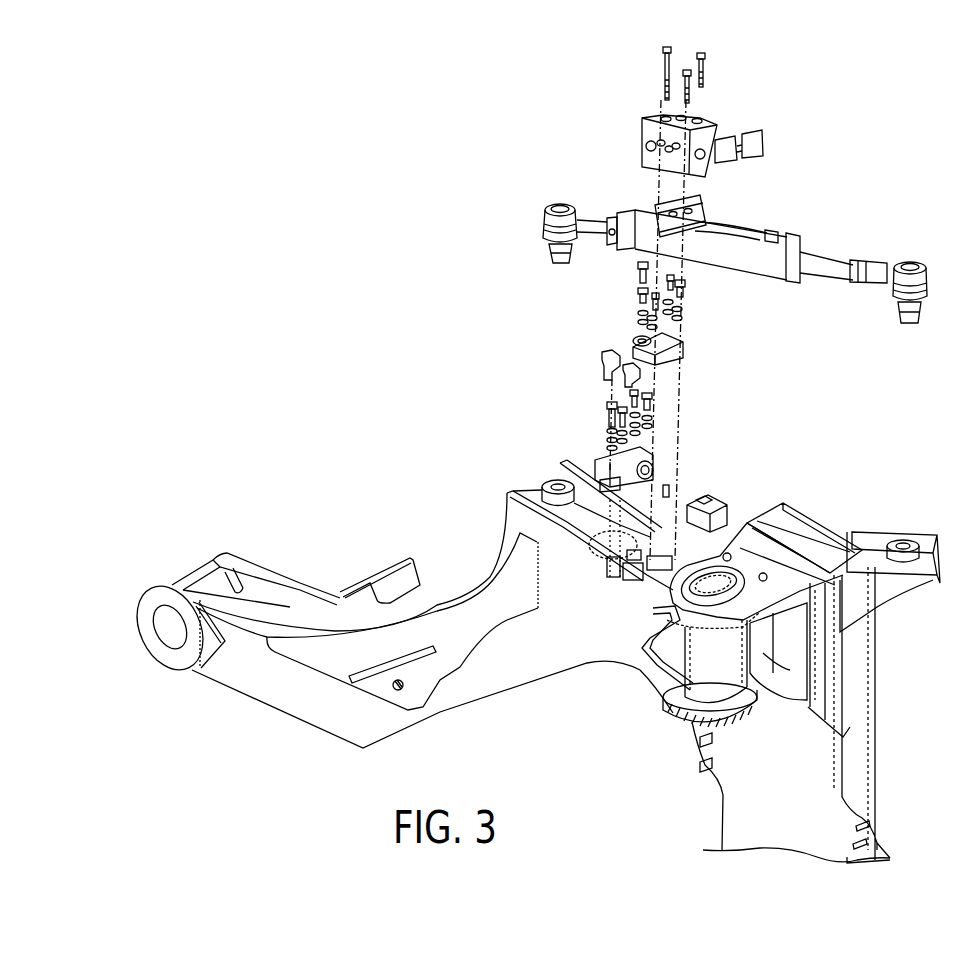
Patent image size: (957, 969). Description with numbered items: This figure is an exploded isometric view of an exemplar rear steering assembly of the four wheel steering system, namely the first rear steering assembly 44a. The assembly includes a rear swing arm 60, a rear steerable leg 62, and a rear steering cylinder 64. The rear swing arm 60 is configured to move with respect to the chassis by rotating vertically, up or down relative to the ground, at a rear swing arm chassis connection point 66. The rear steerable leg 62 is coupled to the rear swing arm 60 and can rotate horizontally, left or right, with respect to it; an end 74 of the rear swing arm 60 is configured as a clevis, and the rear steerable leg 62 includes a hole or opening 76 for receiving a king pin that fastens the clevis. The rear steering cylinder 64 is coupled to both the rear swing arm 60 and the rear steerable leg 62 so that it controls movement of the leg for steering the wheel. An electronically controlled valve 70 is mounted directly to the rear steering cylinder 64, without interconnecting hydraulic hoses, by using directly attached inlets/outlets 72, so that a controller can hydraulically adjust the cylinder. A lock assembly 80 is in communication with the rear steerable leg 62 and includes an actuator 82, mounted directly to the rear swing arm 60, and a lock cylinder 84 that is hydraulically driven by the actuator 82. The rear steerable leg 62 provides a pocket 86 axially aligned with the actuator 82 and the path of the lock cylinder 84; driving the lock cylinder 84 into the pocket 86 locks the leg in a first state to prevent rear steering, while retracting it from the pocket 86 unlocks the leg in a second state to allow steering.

The first rear steering assembly 44a is at (448, 260).
The rear swing arm 60 is at (325, 710).
The rear steerable leg 62 is at (765, 775).
The rear steering cylinder 64 is at (722, 240).
The rear swing arm chassis connection point 66 is at (165, 630).
The electronically controlled valve 70 is at (656, 130).
The directly attached inlets/outlets 72 is at (668, 205).
The end of the rear swing arm 74 is at (710, 667).
The hole or opening 76 is at (724, 577).
The lock assembly 80 is at (578, 415).
The actuator 82 is at (600, 455).
The lock cylinder 84 is at (716, 503).
The pocket 86 is at (660, 573).